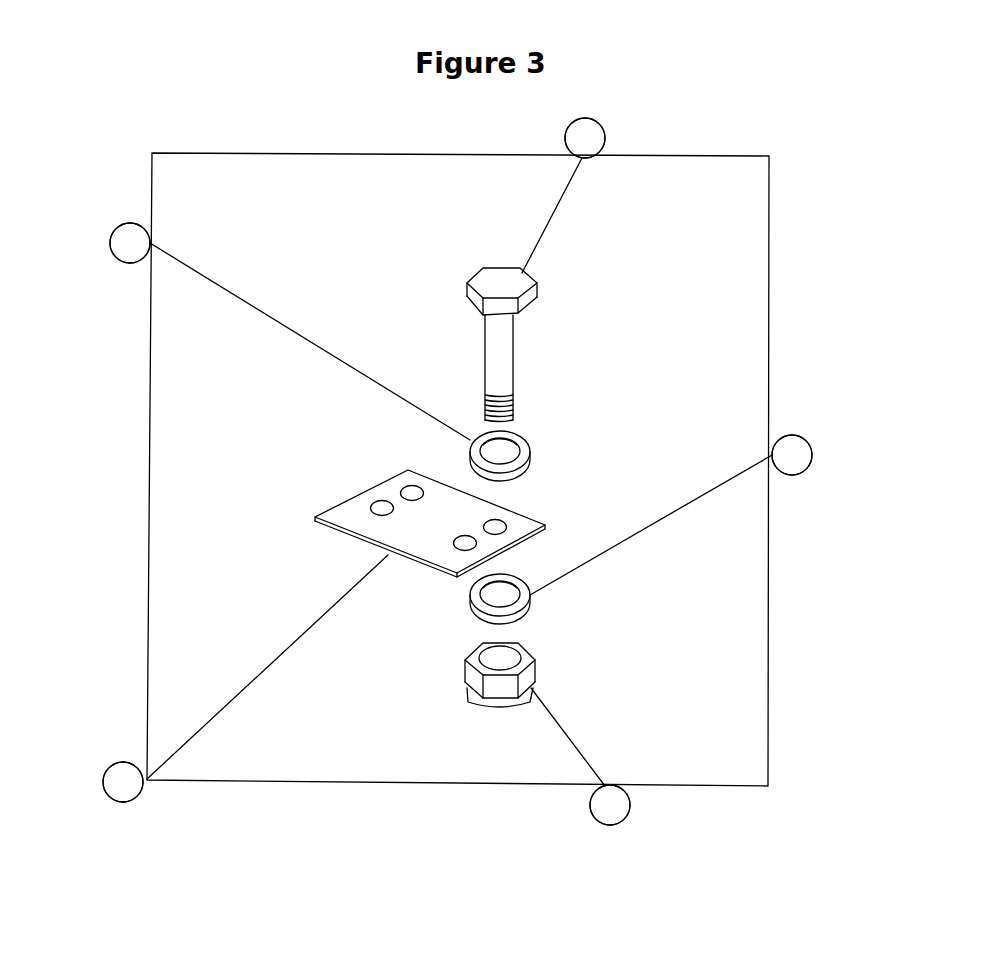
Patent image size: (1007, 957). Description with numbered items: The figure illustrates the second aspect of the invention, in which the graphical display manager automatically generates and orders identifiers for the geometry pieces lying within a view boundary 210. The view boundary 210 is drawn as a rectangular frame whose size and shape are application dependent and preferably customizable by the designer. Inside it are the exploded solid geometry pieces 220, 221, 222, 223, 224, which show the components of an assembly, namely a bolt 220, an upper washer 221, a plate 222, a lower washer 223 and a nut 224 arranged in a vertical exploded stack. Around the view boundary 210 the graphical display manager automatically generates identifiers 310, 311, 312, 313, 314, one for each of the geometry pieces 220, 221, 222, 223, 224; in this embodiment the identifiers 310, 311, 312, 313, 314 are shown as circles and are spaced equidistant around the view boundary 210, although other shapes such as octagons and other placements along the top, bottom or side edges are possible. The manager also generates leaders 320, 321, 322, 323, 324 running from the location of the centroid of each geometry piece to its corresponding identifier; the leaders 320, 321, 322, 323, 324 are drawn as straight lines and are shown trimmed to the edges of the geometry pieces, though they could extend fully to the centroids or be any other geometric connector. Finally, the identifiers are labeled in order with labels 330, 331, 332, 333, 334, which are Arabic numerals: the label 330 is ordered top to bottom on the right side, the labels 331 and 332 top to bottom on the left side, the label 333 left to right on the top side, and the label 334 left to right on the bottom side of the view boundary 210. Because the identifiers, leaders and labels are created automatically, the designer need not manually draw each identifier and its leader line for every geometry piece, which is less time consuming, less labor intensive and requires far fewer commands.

The view boundary 210 is at (768, 682).
The geometry piece 220 is at (528, 277).
The geometry piece 221 is at (525, 438).
The geometry piece 222 is at (546, 530).
The geometry piece 223 is at (530, 607).
The geometry piece 224 is at (533, 673).
The identifier 310 is at (800, 446).
The identifier 311 is at (591, 121).
The identifier 312 is at (127, 226).
The identifier 313 is at (120, 767).
The identifier 314 is at (608, 825).
The leader 320 is at (698, 493).
The leader 321 is at (537, 238).
The leader 322 is at (255, 303).
The leader 323 is at (313, 627).
The leader 324 is at (587, 757).
The label 330 is at (813, 453).
The label 331 is at (120, 238).
The label 332 is at (112, 778).
The label 333 is at (604, 133).
The label 334 is at (630, 803).